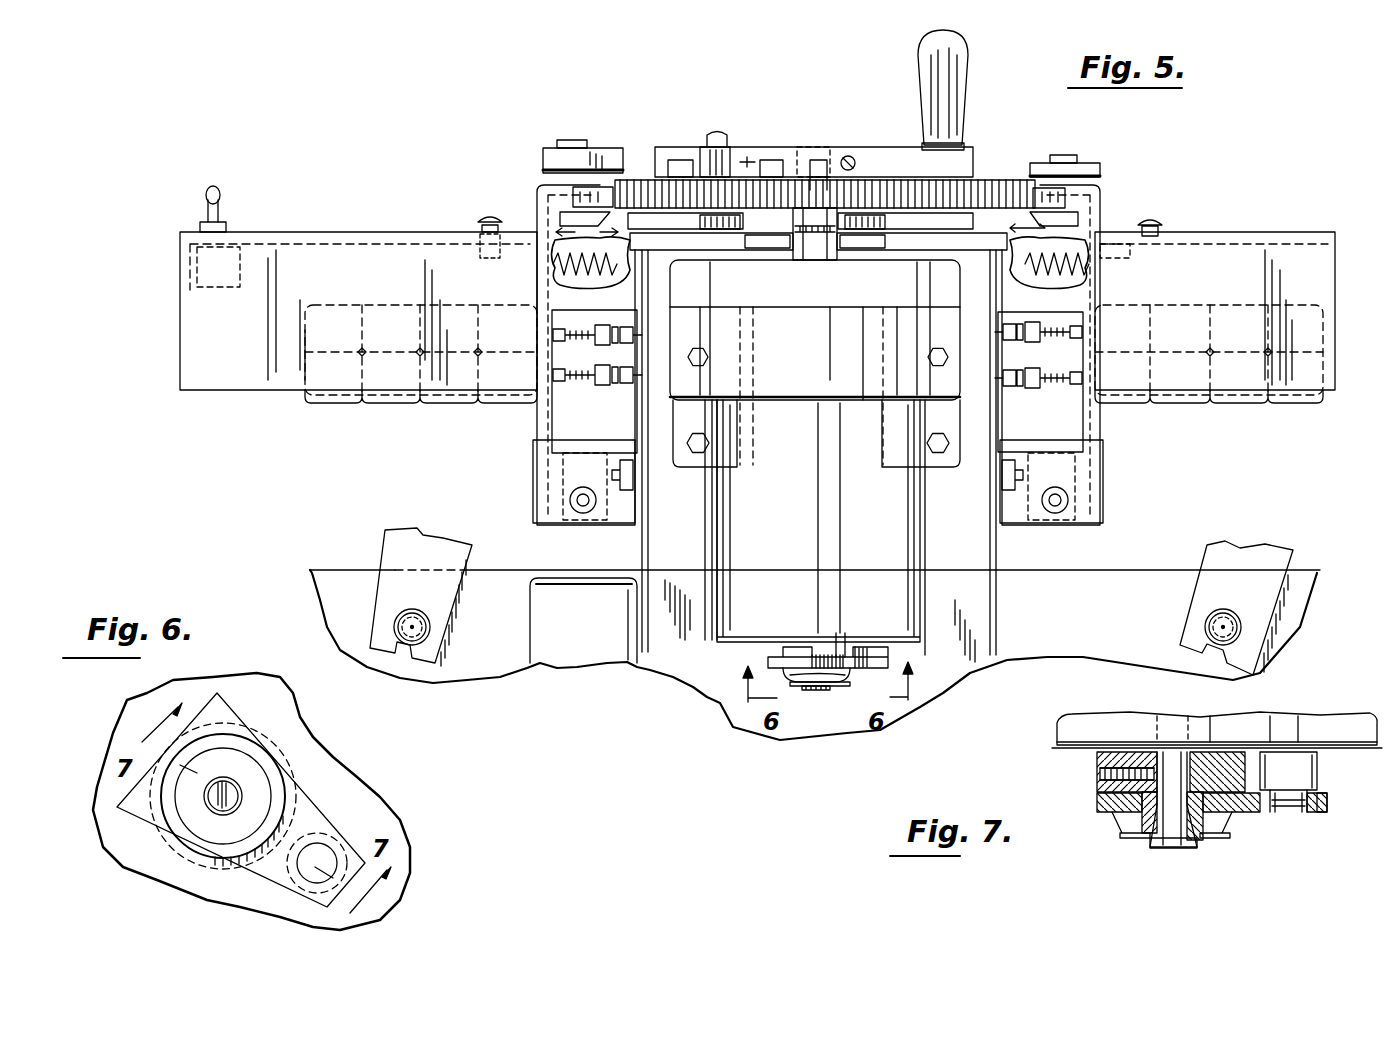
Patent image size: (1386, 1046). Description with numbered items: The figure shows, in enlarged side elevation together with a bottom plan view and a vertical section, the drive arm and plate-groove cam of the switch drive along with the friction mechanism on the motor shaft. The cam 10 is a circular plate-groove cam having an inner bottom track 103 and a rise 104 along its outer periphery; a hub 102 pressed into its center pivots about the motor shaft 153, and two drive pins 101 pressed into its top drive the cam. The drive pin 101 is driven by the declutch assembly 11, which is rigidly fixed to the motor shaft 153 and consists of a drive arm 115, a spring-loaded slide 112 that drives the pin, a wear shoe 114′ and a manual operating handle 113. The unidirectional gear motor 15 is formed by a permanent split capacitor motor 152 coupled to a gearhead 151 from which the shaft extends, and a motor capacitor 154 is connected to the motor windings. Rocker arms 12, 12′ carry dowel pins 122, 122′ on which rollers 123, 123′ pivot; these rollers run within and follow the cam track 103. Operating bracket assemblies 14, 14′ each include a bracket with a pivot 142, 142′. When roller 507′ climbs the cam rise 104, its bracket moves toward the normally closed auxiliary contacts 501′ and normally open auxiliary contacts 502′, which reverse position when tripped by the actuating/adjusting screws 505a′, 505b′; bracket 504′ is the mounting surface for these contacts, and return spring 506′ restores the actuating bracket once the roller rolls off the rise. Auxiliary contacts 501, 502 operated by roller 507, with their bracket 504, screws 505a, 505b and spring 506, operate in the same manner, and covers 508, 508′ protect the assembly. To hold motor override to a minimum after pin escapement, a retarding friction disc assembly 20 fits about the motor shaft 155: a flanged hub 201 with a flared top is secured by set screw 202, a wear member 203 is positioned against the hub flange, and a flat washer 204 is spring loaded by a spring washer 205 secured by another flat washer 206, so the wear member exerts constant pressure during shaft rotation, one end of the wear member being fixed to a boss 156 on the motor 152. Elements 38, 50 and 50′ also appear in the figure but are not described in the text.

In FIG. 5, the cam 10 is at (996, 182).
In FIG. 5, the declutch assembly 11 is at (655, 150).
In FIG. 5, the rocker arm 12 is at (942, 236).
In FIG. 5, the rocker arm 12′ is at (662, 240).
In FIG. 5, the operating bracket assembly 14 is at (1203, 554).
In FIG. 5, the operating bracket assembly 14′ is at (418, 526).
In FIG. 5, the unidirectional gear motor 15 is at (708, 498).
In FIG. 6, the retarding friction disc assembly 20 is at (322, 788).
In FIG. 7, the retarding friction disc assembly 20 is at (1312, 820).
In FIG. 5, the toggle switch 38 is at (213, 204).
In FIG. 5, the cushion assembly 50 is at (1228, 410).
In FIG. 5, the cushion assembly 50′ is at (408, 408).
In FIG. 5, the drive pin 101 is at (820, 160).
In FIG. 5, the hub 102 is at (800, 195).
In FIG. 5, the inner track 103 is at (807, 240).
In FIG. 5, the rise 104 is at (932, 162).
In FIG. 5, the slide 112 is at (684, 160).
In FIG. 5, the manual operating handle 113 is at (932, 58).
In FIG. 5, the wear shoe 114′ is at (560, 166).
In FIG. 5, the drive arm 115 is at (886, 150).
In FIG. 5, the dowel pin 122 is at (898, 222).
In FIG. 5, the dowel pin 122′ is at (688, 222).
In FIG. 5, the roller 123 is at (858, 236).
In FIG. 5, the roller 123′ is at (722, 235).
In FIG. 5, the pivot 142 is at (1217, 626).
In FIG. 5, the pivot 142′ is at (430, 618).
In FIG. 5, the gearhead 151 is at (822, 346).
In FIG. 5, the permanent split capacitor motor 152 is at (862, 536).
In FIG. 6, the permanent split capacitor motor 152 is at (320, 745).
In FIG. 7, the permanent split capacitor motor 152 is at (1330, 733).
In FIG. 5, the motor shaft 153 is at (810, 148).
In FIG. 5, the motor capacitor 154 is at (597, 588).
In FIG. 5, the motor shaft 155 is at (812, 650).
In FIG. 6, the motor shaft 155 is at (250, 796).
In FIG. 7, the motor shaft 155 is at (1170, 760).
In FIG. 5, the boss 156 is at (866, 648).
In FIG. 6, the boss 156 is at (328, 857).
In FIG. 7, the boss 156 is at (1283, 780).
In FIG. 5, the flanged hub 201 is at (839, 645).
In FIG. 7, the flanged hub 201 is at (1238, 760).
In FIG. 7, the set screw 202 is at (1097, 770).
In FIG. 5, the wear member 203 is at (768, 662).
In FIG. 6, the wear member 203 is at (238, 732).
In FIG. 7, the wear member 203 is at (1097, 796).
In FIG. 5, the flat washer 204 is at (848, 678).
In FIG. 6, the flat washer 204 is at (248, 738).
In FIG. 7, the flat washer 204 is at (1108, 815).
In FIG. 5, the spring washer 205 is at (810, 692).
In FIG. 7, the spring washer 205 is at (1130, 838).
In FIG. 5, the flat washer 206 is at (840, 688).
In FIG. 6, the flat washer 206 is at (245, 773).
In FIG. 7, the flat washer 206 is at (1225, 835).
In FIG. 5, the normally closed auxiliary contacts 501 is at (1252, 312).
In FIG. 5, the normally closed auxiliary contacts 501′ is at (400, 312).
In FIG. 5, the normally open auxiliary contacts 502 is at (1305, 403).
In FIG. 5, the normally open auxiliary contacts 502′ is at (325, 403).
In FIG. 5, the bracket 504 is at (1100, 206).
In FIG. 5, the bracket 504′ is at (540, 500).
In FIG. 5, the actuating/adjusting screw 505a is at (1080, 335).
In FIG. 5, the actuating/adjusting screw 505a′ is at (558, 334).
In FIG. 5, the actuating/adjusting screw 505b is at (1070, 388).
In FIG. 5, the actuating/adjusting screw 505b′ is at (568, 385).
In FIG. 5, the return spring 506 is at (1092, 266).
In FIG. 5, the return spring 506′ is at (560, 280).
In FIG. 5, the roller 507 is at (1062, 194).
In FIG. 5, the roller 507′ is at (575, 198).
In FIG. 5, the cover 508 is at (1254, 232).
In FIG. 5, the cover 508′ is at (390, 232).